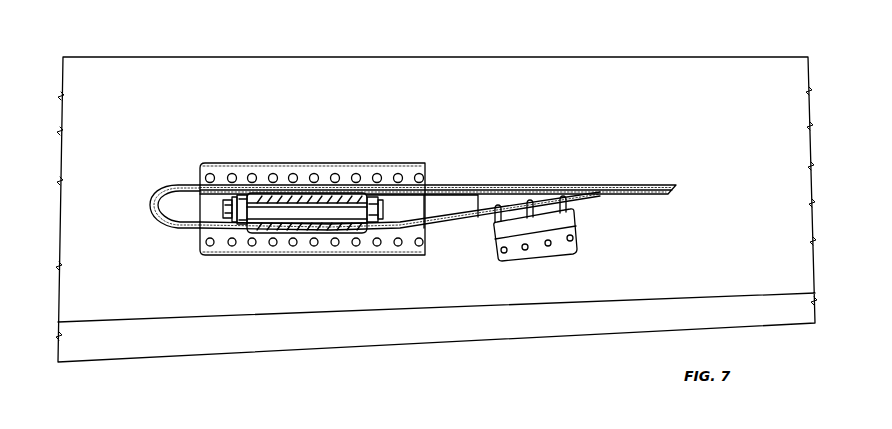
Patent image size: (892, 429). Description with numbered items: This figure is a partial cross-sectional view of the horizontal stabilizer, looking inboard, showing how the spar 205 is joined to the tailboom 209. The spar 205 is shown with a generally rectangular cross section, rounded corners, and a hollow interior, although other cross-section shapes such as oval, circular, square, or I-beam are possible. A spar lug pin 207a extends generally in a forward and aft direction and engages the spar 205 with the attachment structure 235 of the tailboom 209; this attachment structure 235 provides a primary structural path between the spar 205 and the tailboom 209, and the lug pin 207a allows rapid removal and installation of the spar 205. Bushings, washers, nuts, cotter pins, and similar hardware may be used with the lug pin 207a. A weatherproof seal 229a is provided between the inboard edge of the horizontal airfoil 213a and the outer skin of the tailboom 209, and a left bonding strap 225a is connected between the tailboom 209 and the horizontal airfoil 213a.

The tailboom 209 is at (356, 57).
The spar 205 is at (262, 234).
The weatherproof seal 229a is at (179, 186).
The horizontal airfoil 213a is at (455, 185).
The spar lug pin 207a is at (382, 217).
The attachment structure 235 is at (376, 199).
The left bonding strap 225a is at (540, 262).